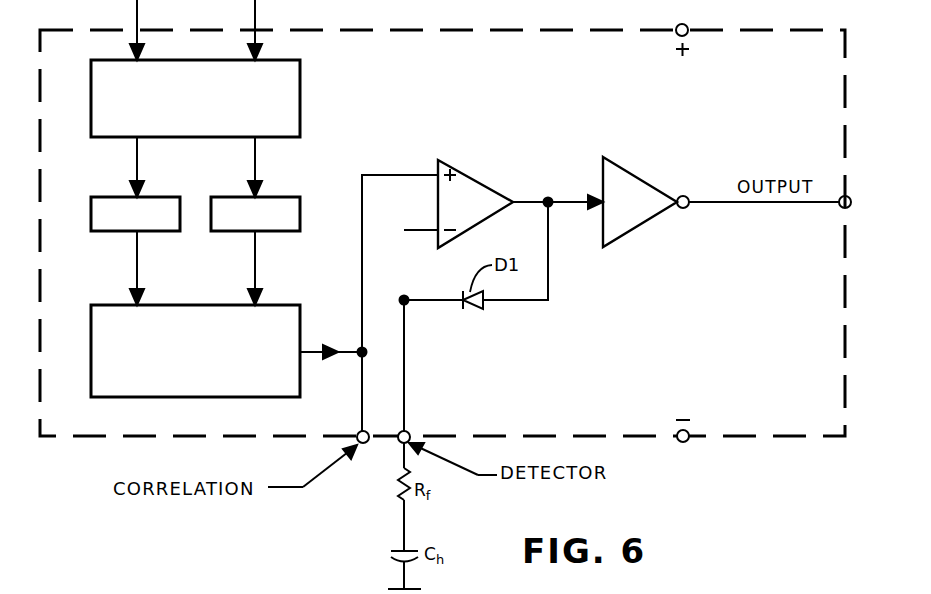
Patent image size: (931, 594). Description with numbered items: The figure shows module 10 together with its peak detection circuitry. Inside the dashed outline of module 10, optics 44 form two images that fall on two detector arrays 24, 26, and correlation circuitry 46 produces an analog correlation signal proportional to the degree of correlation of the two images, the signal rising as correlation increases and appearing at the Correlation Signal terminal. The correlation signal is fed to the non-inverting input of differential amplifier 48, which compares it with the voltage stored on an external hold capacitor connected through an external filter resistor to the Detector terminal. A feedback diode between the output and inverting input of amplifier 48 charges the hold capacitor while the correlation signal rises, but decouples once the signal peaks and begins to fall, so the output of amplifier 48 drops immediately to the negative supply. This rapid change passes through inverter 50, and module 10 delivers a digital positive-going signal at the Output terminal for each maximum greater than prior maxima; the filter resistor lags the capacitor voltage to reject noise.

The module 10 is at (553, 30).
The optics 44 is at (300, 93).
The detector array 24 is at (162, 196).
The detector array 26 is at (273, 196).
The correlation circuitry 46 is at (280, 304).
The differential amplifier 48 is at (481, 180).
The inverter 50 is at (645, 177).